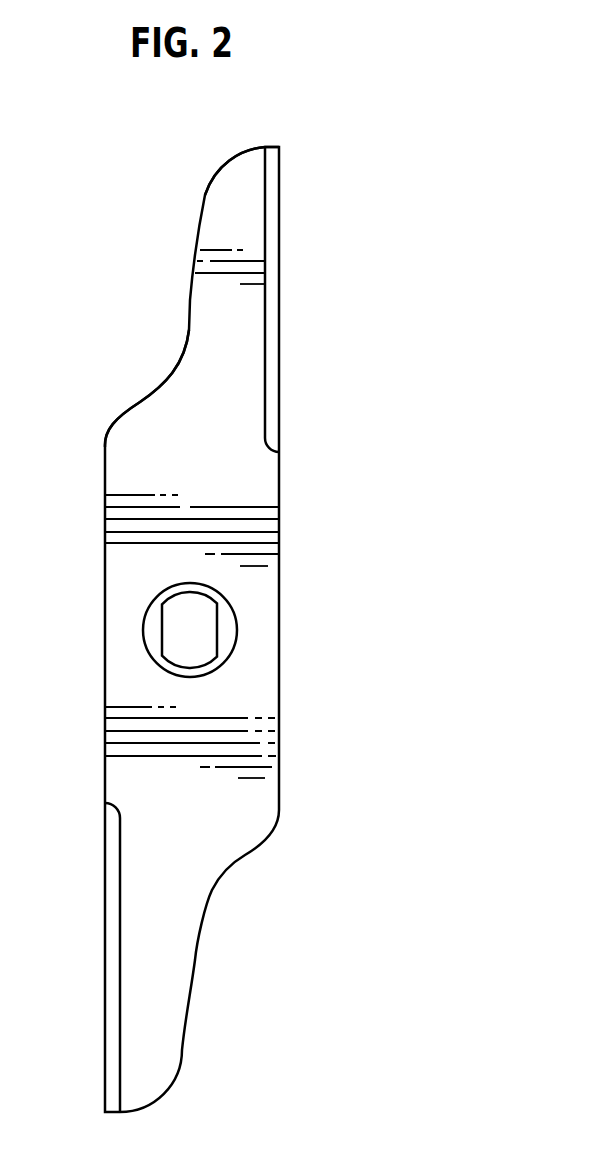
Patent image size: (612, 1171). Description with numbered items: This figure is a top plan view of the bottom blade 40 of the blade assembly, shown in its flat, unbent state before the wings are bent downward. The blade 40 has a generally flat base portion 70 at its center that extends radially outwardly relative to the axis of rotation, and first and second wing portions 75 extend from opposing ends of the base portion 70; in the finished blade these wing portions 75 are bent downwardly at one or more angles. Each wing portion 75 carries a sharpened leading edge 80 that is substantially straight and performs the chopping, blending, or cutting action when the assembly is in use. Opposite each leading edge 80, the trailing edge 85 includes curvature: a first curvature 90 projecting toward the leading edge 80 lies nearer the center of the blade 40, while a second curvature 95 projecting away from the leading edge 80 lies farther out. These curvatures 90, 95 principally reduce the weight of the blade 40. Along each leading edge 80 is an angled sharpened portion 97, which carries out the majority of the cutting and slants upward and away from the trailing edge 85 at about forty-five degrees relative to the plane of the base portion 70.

The bottom blade 40 is at (395, 465).
The base portion 70 is at (237, 598).
The wing portion 75 is at (258, 236).
The leading edge 80 is at (285, 358).
The trailing edge 85 is at (187, 270).
The first curvature 90 is at (115, 422).
The second curvature 95 is at (253, 147).
The angled sharpened portion 97 is at (272, 277).